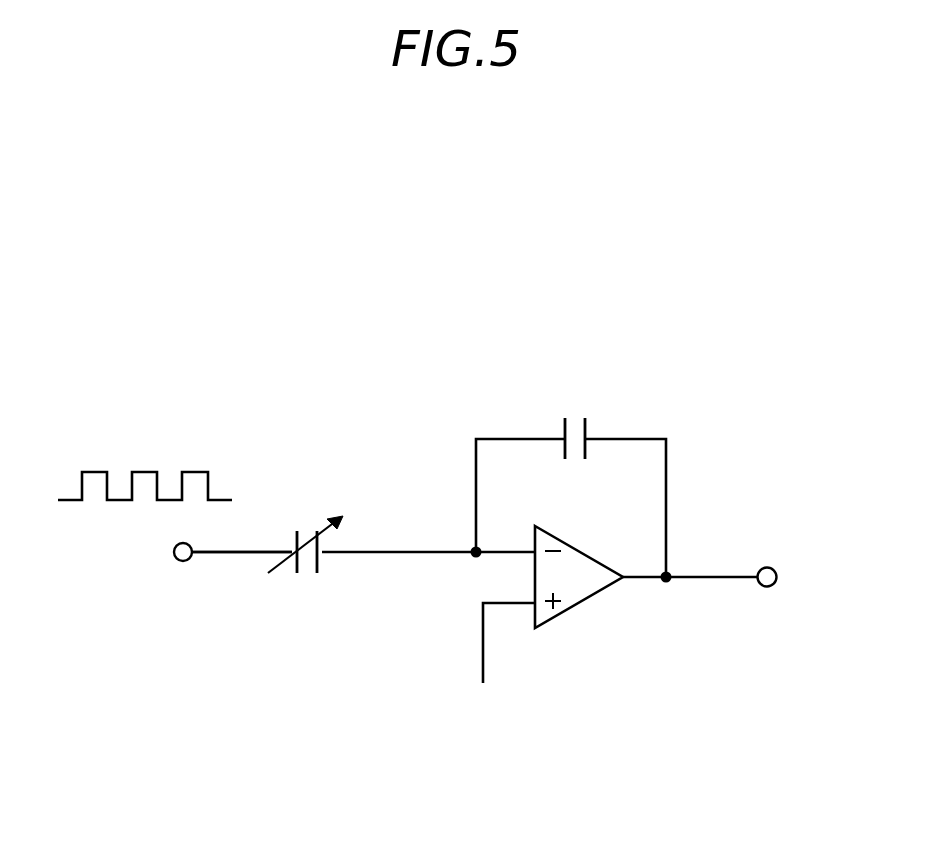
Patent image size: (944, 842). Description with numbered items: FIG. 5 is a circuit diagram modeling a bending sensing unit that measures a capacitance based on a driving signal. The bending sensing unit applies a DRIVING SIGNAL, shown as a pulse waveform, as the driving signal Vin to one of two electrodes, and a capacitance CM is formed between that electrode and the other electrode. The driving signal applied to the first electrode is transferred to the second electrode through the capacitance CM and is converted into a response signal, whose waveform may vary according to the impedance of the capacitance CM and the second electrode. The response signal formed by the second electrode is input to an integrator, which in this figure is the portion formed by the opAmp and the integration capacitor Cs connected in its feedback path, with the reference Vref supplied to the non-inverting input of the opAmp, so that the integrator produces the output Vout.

The driving signal DRIVING SIGNAL is at (145, 471).
The driving signal Vin is at (207, 554).
The capacitance CM is at (305, 537).
The integration capacitor Cs is at (571, 497).
The element opAmp is at (588, 588).
The element Vref is at (498, 662).
The output Vout is at (750, 579).